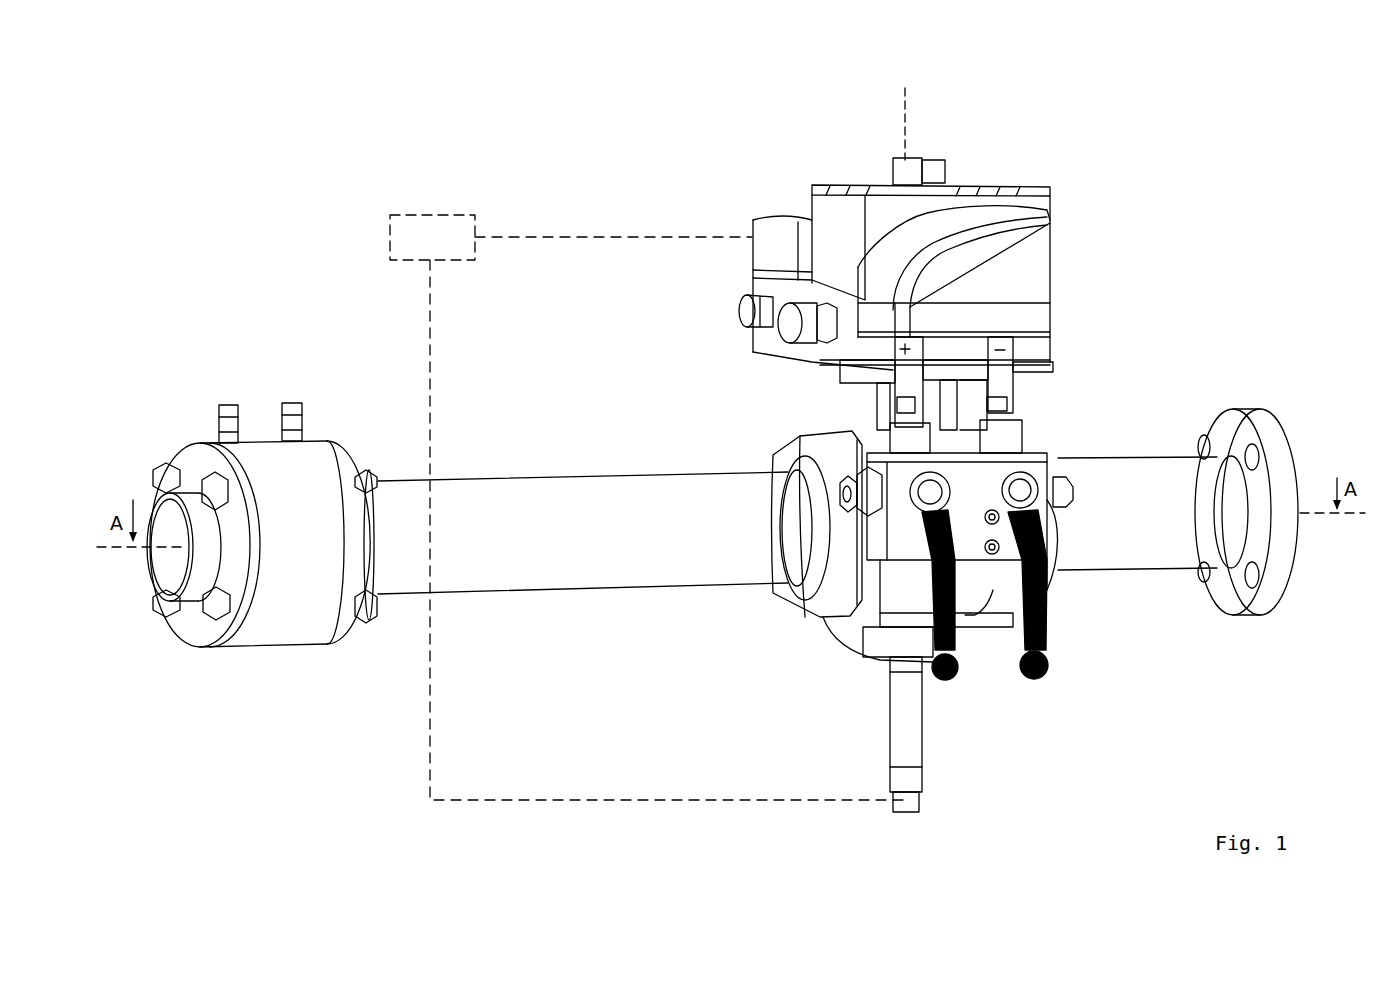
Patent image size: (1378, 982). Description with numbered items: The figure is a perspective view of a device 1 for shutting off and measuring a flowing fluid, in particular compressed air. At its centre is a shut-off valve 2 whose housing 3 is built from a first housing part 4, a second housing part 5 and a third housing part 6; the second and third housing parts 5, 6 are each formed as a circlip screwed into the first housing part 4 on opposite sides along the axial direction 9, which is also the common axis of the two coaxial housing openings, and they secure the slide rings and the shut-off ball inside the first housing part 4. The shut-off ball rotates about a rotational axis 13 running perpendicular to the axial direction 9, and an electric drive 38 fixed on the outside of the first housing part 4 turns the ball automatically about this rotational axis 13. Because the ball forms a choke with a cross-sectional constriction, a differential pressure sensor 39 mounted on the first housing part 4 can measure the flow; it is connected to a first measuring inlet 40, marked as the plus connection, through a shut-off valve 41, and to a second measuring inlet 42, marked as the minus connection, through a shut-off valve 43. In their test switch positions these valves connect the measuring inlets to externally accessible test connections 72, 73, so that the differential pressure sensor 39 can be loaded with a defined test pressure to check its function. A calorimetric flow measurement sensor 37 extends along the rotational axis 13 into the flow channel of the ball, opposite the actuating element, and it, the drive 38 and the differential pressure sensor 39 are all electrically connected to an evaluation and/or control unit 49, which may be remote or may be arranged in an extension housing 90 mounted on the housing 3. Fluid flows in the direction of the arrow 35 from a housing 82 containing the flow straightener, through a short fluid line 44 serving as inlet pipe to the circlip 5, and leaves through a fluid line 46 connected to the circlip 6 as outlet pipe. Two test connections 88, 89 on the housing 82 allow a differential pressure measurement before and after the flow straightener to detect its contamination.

The device 1 is at (496, 112).
The shut-off valve 2 is at (823, 650).
The housing 3 is at (806, 430).
The first housing part 4 is at (993, 612).
The second housing part 5 is at (788, 603).
The third housing part 6 is at (1048, 572).
The axial direction 9 is at (1312, 515).
The rotational axis 13 is at (908, 118).
The arrow 35 is at (555, 425).
The calorimetric flow measurement sensor 37 is at (913, 738).
The electric drive 38 is at (815, 198).
The differential pressure sensor 39 is at (1042, 268).
The first measuring inlet 40 is at (1012, 382).
The shut-off valve 41 is at (1040, 472).
The second measuring inlet 42 is at (886, 392).
The shut-off valve 43 is at (938, 492).
The fluid line 44 is at (626, 482).
The fluid line 46 is at (1152, 562).
The evaluation and/or control unit 49 is at (392, 242).
The test connection 72 is at (1060, 487).
The test connection 73 is at (838, 498).
The housing 82 is at (263, 437).
The test connection 88 is at (228, 404).
The test connection 89 is at (291, 402).
The extension housing 90 is at (756, 279).